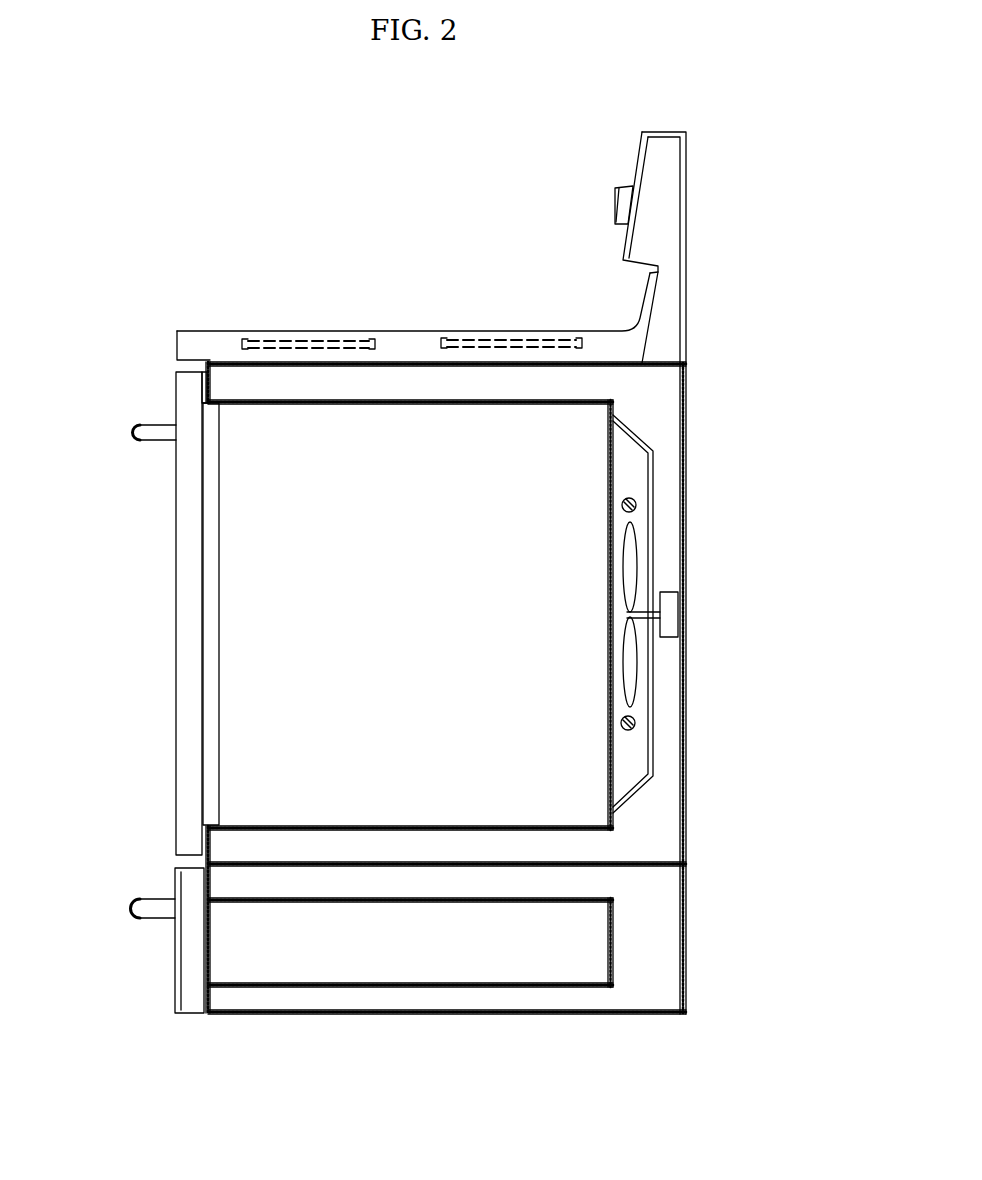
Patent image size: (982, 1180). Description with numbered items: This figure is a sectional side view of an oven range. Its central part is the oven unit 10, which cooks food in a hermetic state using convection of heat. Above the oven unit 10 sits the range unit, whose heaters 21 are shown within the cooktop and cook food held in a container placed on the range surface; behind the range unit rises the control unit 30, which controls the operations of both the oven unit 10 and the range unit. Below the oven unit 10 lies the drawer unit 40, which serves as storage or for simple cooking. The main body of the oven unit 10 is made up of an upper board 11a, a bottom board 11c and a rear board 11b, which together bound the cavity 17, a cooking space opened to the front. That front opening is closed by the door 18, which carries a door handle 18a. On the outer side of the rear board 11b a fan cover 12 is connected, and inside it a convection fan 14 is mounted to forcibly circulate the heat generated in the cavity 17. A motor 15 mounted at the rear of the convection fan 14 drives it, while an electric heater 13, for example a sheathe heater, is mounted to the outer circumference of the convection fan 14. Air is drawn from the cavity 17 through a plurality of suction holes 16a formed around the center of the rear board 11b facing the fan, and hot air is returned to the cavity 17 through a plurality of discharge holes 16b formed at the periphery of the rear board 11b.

The oven unit 10 is at (664, 479).
The upper board 11a is at (416, 405).
The rear board 11b is at (609, 508).
The bottom board 11c is at (413, 825).
The fan cover 12 is at (648, 513).
The electric heater 13 is at (636, 723).
The convection fan 14 is at (639, 565).
The motor 15 is at (673, 615).
The suction holes 16a is at (609, 567).
The discharge holes 16b is at (610, 455).
The cavity 17 is at (410, 615).
The door 18 is at (137, 613).
The door handle 18a is at (153, 425).
The heaters 21 is at (434, 331).
The control unit 30 is at (617, 167).
The drawer unit 40 is at (163, 969).